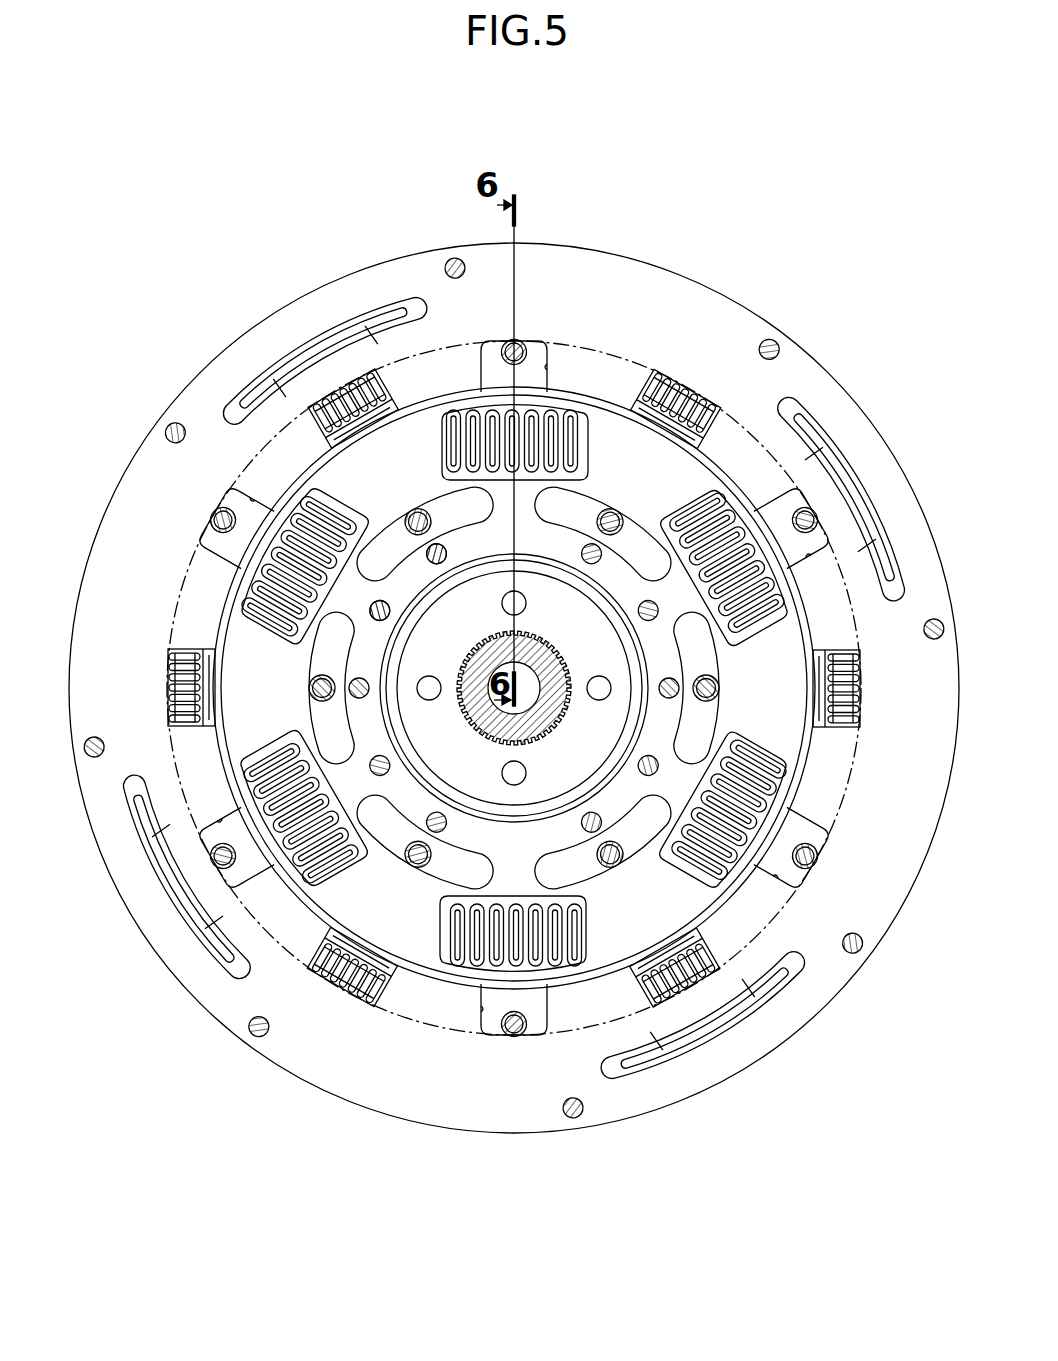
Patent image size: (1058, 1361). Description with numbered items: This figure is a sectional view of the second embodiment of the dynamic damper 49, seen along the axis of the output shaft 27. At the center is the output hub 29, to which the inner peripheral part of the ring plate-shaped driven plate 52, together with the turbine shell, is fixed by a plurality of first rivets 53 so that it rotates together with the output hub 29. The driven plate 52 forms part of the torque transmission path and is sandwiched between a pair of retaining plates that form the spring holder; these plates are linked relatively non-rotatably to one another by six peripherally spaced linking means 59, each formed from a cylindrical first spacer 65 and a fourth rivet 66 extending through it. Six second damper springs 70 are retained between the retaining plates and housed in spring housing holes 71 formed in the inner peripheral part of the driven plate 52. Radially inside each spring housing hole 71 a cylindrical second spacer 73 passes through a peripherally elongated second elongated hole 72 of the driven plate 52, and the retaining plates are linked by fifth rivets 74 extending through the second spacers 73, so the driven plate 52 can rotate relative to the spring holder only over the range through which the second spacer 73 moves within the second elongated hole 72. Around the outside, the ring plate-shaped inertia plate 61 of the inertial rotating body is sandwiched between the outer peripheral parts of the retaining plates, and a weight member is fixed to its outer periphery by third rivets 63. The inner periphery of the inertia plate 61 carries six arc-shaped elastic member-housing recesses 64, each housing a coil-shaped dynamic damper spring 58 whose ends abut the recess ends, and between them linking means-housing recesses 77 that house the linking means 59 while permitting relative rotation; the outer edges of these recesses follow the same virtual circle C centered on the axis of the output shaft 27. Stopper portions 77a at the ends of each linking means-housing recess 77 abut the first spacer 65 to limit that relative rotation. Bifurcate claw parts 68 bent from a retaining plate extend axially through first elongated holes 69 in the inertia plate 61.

The output shaft 27 is at (536, 733).
The output hub 29 is at (582, 618).
The dynamic damper 49 is at (626, 246).
The driven plate 52 is at (838, 736).
The first rivets 53 is at (390, 612).
The dynamic damper spring 58 is at (862, 680).
The linking means 59 is at (530, 340).
The inertia plate 61 is at (710, 298).
The third rivets 63 is at (463, 262).
The elastic member-housing recess 64 is at (822, 690).
The first spacer 65 is at (490, 343).
The fourth rivet 66 is at (514, 340).
The claw part 68 is at (290, 367).
The first elongated hole 69 is at (828, 405).
The second damper spring 70 is at (748, 505).
The spring housing hole 71 is at (588, 432).
The second elongated hole 72 is at (564, 568).
The second spacer 73 is at (432, 562).
The fifth rivets 74 is at (418, 506).
The linking means-housing recess 77 is at (482, 368).
The stopper portion 77a is at (548, 370).
The virtual circle C is at (376, 1078).